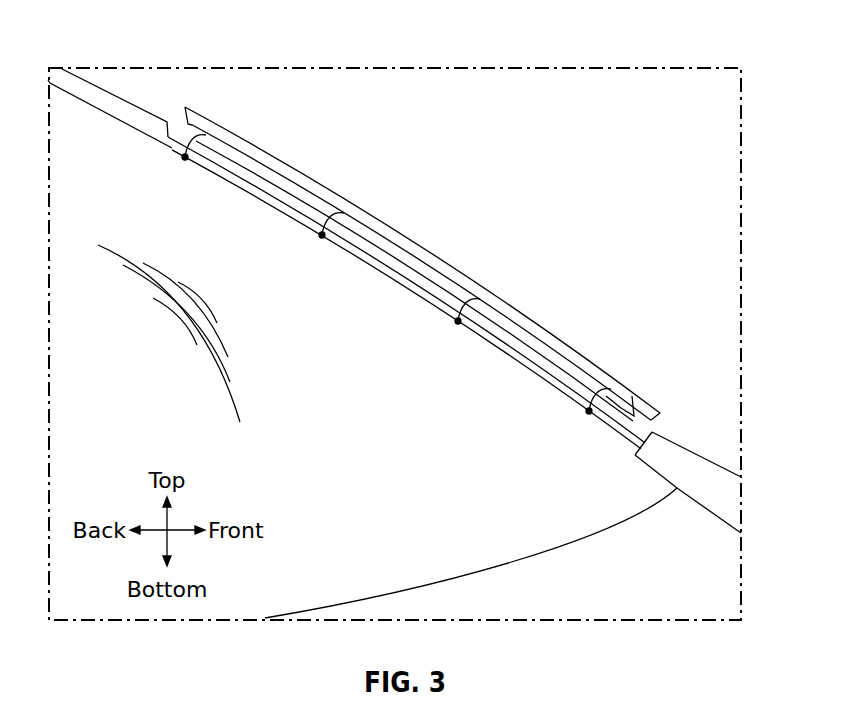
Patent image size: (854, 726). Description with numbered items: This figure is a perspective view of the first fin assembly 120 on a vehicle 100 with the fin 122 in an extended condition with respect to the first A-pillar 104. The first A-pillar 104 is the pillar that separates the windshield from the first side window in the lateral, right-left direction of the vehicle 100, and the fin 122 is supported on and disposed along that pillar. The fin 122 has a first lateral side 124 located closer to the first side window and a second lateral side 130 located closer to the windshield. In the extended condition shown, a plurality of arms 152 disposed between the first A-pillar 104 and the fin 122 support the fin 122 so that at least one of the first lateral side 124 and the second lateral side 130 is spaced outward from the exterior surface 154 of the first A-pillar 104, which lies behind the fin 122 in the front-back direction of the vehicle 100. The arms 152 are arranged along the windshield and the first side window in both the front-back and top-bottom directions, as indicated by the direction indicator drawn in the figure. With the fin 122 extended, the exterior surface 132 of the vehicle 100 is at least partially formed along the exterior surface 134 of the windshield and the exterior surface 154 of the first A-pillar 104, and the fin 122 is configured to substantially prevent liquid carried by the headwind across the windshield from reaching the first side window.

The vehicle 100 is at (615, 141).
The first A-pillar 104 is at (124, 110).
The first fin assembly 120 is at (422, 263).
The fin 122 is at (467, 289).
The first lateral side 124 is at (545, 328).
The second lateral side 130 is at (631, 393).
The exterior surface of the vehicle 132 is at (406, 282).
The exterior surface of the windshield 134 is at (303, 503).
The arm 152 is at (185, 154).
The exterior surface of the first A-pillar 154 is at (362, 250).